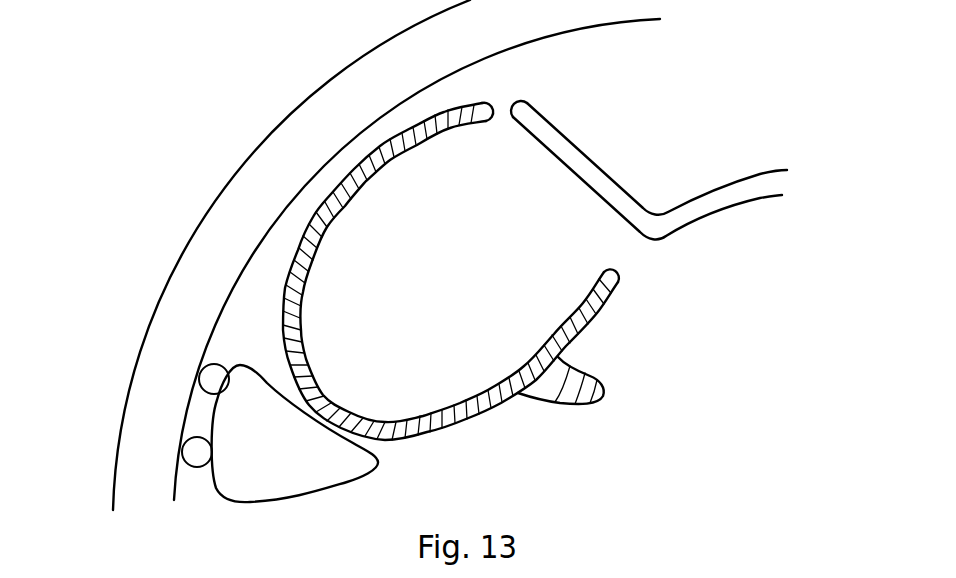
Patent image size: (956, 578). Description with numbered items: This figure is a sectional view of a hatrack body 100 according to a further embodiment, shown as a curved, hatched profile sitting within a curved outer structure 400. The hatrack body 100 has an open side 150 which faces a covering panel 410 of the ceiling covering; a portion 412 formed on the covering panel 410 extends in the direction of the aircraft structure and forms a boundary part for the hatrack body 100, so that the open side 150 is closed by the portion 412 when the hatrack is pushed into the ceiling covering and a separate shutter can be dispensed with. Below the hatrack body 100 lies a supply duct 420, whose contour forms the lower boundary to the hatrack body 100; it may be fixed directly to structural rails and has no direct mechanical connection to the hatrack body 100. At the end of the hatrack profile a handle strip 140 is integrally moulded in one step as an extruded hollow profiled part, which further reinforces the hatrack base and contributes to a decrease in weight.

The vessel wall 400 is at (192, 286).
The supply duct 420 is at (248, 470).
The hatrack body 100 is at (303, 260).
The handle strip 140 is at (597, 393).
The portion 412 is at (583, 158).
The covering panel 410 is at (737, 188).
The open side 150 is at (590, 233).